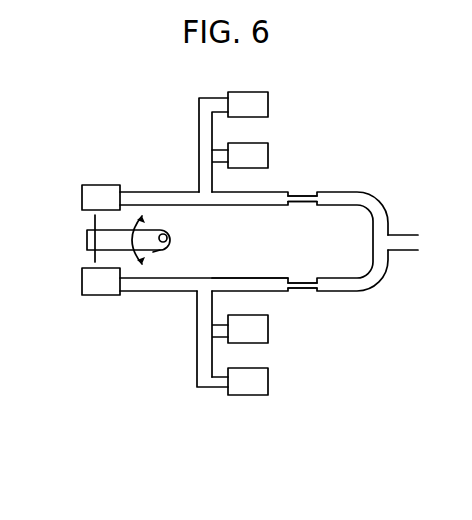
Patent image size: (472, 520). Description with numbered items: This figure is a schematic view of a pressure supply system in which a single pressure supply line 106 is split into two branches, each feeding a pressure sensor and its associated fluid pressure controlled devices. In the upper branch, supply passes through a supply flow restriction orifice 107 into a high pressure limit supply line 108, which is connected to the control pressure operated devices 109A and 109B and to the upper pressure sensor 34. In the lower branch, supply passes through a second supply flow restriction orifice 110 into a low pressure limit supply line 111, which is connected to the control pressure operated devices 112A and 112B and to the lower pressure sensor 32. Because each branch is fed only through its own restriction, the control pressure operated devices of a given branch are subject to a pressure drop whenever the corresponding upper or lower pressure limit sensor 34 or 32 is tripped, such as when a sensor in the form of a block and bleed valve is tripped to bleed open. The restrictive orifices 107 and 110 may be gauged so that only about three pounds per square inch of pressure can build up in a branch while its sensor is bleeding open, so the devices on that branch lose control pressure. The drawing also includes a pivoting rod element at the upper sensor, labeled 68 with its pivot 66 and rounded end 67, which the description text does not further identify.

The lower pressure sensor 32 is at (102, 295).
The upper pressure sensor 34 is at (107, 185).
The pivot of stirring rod 66 is at (168, 236).
The rounded end of stirring rod 67 is at (153, 252).
The stirring rod 68 is at (95, 260).
The pressure supply line 106 is at (400, 251).
The supply flow restriction orifice 107 is at (305, 195).
The high pressure limit supply line 108 is at (268, 206).
The control pressure operated device 109A is at (268, 150).
The control pressure operated device 109B is at (268, 102).
The supply flow restriction orifice 110 is at (308, 277).
The low pressure limit supply line 111 is at (237, 277).
The control pressure operated device 112A is at (268, 330).
The control pressure operated device 112B is at (268, 378).